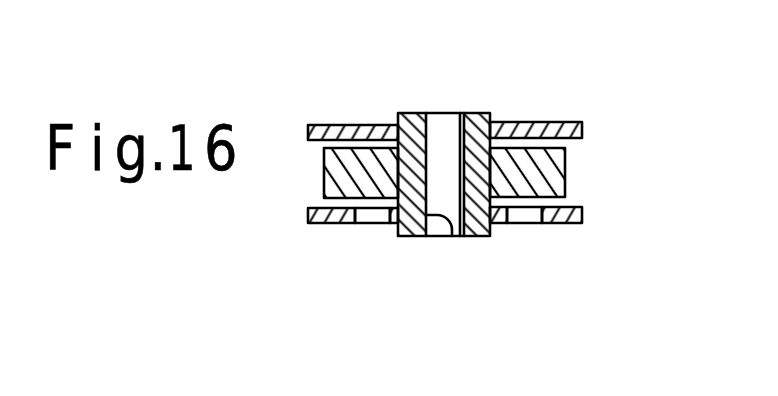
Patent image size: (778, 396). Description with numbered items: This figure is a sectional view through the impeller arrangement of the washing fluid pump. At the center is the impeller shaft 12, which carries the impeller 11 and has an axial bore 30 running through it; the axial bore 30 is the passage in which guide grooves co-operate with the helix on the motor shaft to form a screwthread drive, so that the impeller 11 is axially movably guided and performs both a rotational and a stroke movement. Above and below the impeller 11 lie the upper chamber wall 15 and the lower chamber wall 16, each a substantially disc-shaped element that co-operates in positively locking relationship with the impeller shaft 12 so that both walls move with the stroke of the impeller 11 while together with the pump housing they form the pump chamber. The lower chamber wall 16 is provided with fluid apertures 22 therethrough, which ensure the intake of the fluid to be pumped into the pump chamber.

The impeller 11 is at (566, 170).
The impeller shaft 12 is at (429, 136).
The upper chamber wall 15 is at (587, 123).
The lower chamber wall 16 is at (583, 214).
The fluid apertures 22 is at (373, 222).
The axial bore 30 is at (449, 236).